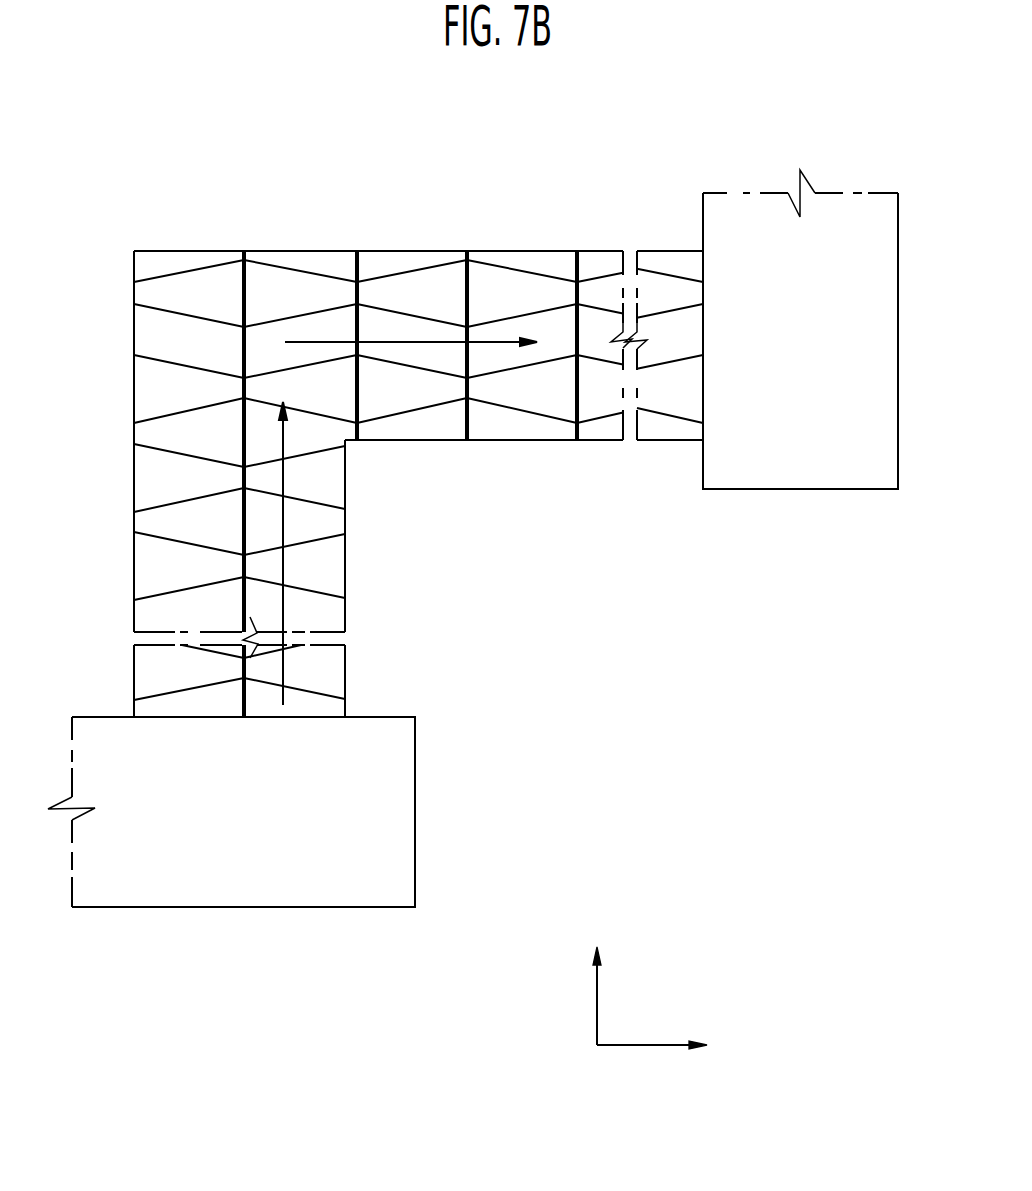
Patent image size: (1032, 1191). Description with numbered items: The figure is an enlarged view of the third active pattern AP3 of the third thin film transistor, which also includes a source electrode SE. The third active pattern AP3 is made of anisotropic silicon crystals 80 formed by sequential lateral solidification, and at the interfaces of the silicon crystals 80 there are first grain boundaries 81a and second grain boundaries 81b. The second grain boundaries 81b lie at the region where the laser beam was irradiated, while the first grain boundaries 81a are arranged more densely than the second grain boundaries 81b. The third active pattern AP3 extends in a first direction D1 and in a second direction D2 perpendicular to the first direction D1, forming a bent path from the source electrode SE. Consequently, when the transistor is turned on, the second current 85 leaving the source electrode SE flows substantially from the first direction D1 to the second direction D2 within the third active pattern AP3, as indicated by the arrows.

The third active pattern AP3 is at (422, 151).
The first grain boundaries 81a is at (299, 315).
The second grain boundaries 81b is at (353, 327).
The silicon crystals 80 is at (418, 292).
The second current 85 is at (418, 342).
The source electrode SE is at (263, 895).
The first direction D1 is at (665, 1046).
The second direction D2 is at (597, 979).